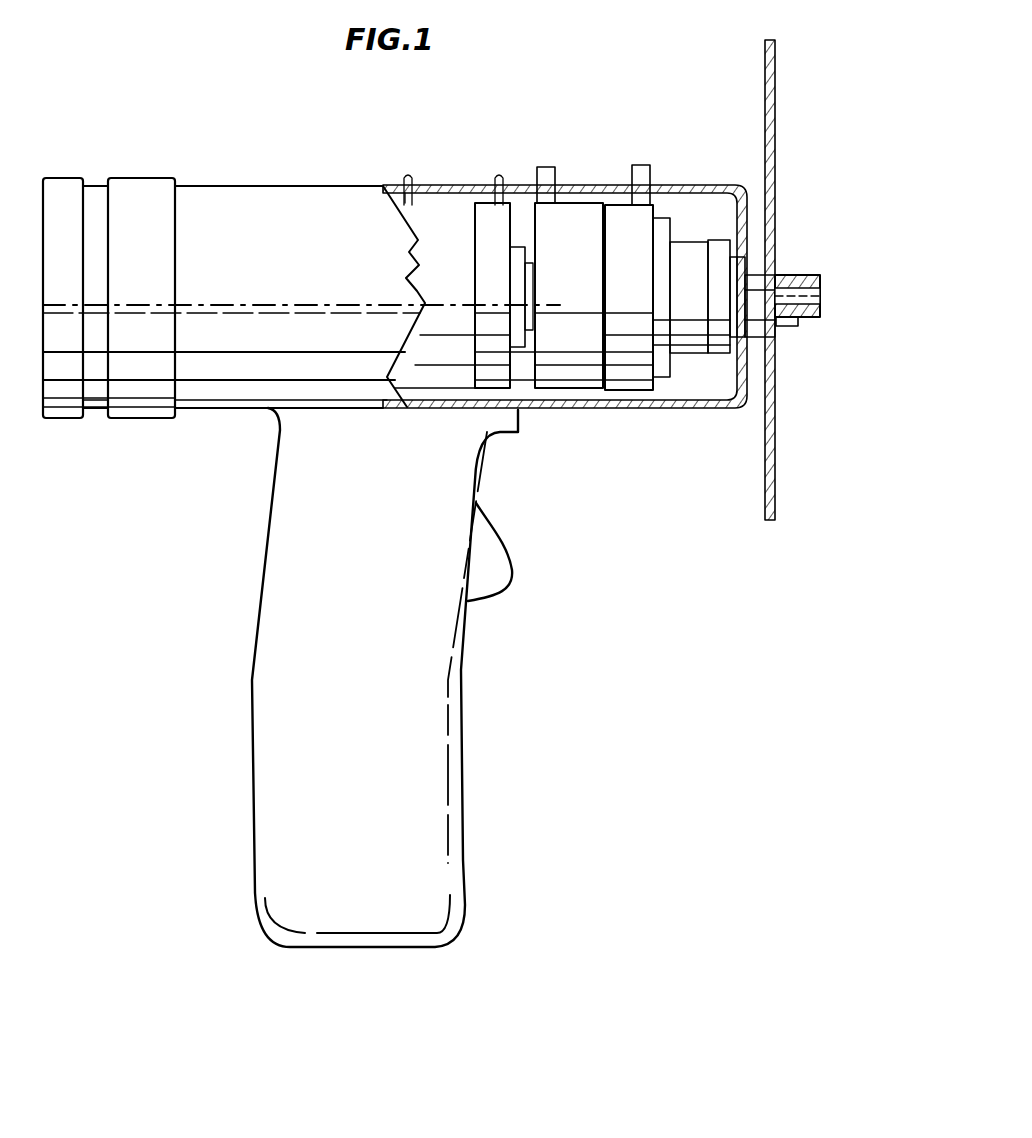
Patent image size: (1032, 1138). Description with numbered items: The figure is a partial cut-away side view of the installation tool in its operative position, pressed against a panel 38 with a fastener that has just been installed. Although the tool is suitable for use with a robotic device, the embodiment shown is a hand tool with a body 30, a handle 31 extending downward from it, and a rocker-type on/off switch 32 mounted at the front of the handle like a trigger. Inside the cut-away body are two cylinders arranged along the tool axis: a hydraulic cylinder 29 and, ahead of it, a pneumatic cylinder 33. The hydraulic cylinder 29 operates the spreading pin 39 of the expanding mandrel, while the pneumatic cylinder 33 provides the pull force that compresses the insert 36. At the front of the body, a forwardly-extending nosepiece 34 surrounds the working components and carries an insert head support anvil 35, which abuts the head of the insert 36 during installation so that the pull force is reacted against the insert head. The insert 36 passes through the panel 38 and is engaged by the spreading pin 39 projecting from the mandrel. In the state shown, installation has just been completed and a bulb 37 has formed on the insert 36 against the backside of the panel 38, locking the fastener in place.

The hydraulic cylinder 29 is at (440, 240).
The body 30 is at (258, 208).
The handle 31 is at (293, 752).
The rocker-type on/off switch 32 is at (495, 545).
The pneumatic cylinder 33 is at (573, 238).
The nosepiece 34 is at (710, 185).
The insert head support anvil 35 is at (750, 258).
The insert 36 is at (800, 326).
The bulb 37 is at (773, 270).
The panel 38 is at (773, 65).
The spreading pin 39 is at (820, 300).